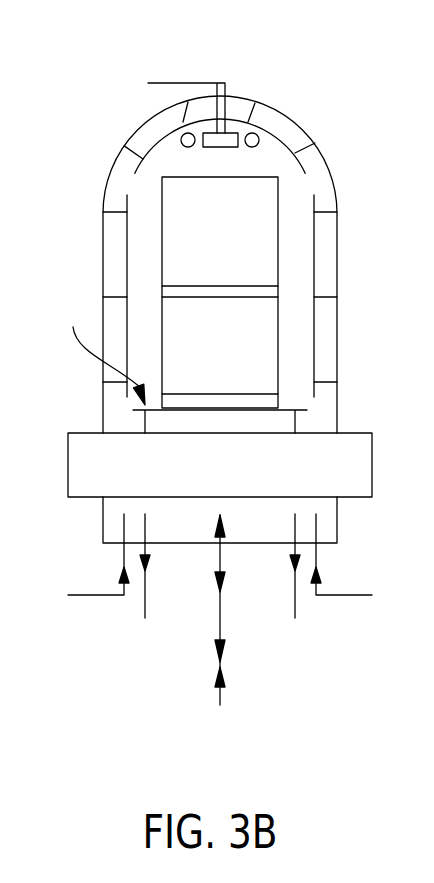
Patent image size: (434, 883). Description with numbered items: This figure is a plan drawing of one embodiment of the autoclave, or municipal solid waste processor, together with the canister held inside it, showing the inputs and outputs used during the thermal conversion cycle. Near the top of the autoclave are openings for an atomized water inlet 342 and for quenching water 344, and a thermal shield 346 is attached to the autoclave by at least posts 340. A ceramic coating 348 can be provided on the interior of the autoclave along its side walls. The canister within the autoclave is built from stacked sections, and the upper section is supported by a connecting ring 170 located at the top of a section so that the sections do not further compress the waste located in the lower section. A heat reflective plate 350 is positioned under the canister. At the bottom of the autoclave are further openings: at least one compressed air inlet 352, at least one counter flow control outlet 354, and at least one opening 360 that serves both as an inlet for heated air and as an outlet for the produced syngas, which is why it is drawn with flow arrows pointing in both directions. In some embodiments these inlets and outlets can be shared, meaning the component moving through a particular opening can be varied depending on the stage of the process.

The posts 340 is at (315, 143).
The atomized water inlet 342 is at (256, 135).
The quenching water 344 is at (183, 83).
The thermal shield 346 is at (150, 148).
The ceramic coating 348 is at (107, 253).
The connecting ring 170 is at (278, 292).
The heat reflective plate 350 is at (103, 346).
The compressed air inlet 352 is at (95, 597).
The counter flow control outlet 354 is at (145, 597).
The inlet for heated air / outlet for produced syngas 360 is at (221, 692).